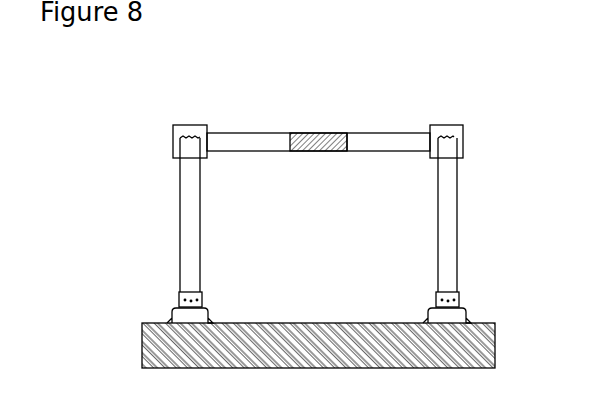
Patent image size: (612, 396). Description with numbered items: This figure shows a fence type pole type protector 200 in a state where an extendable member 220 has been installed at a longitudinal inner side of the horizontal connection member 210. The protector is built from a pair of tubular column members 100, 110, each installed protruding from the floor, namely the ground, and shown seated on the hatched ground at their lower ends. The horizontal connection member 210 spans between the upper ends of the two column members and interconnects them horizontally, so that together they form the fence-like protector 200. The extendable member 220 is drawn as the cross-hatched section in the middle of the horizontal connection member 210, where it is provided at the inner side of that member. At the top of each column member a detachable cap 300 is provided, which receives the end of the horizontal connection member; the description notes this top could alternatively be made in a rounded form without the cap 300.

The first post 100 is at (179, 232).
The tubular column member 110 is at (452, 223).
The fence type pole type protector 200 is at (227, 83).
The horizontal connection member 210 is at (348, 141).
The extendable member 220 is at (318, 133).
The detachable cap 300 is at (180, 137).